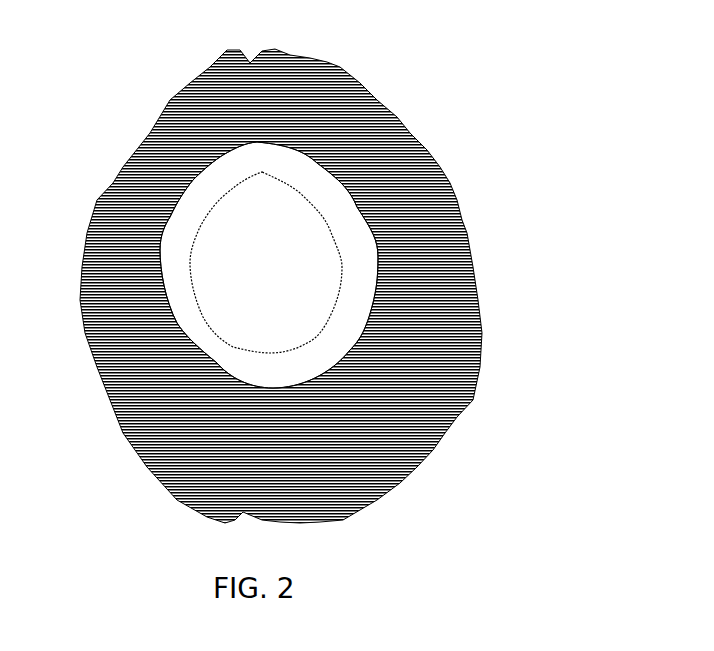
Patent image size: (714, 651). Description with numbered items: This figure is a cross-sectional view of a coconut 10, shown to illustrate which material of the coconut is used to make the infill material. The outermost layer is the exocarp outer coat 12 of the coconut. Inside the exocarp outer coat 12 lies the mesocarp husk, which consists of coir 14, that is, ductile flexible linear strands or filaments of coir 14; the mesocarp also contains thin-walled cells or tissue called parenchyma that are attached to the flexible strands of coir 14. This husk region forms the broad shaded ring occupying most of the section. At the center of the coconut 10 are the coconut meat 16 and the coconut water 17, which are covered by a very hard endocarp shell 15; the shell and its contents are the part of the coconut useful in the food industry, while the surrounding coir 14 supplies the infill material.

The coconut 10 is at (510, 279).
The exocarp outer coat 12 is at (404, 130).
The coir 14 is at (188, 123).
The endocarp shell 15 is at (168, 213).
The coconut meat 16 is at (173, 253).
The coconut water 17 is at (252, 295).